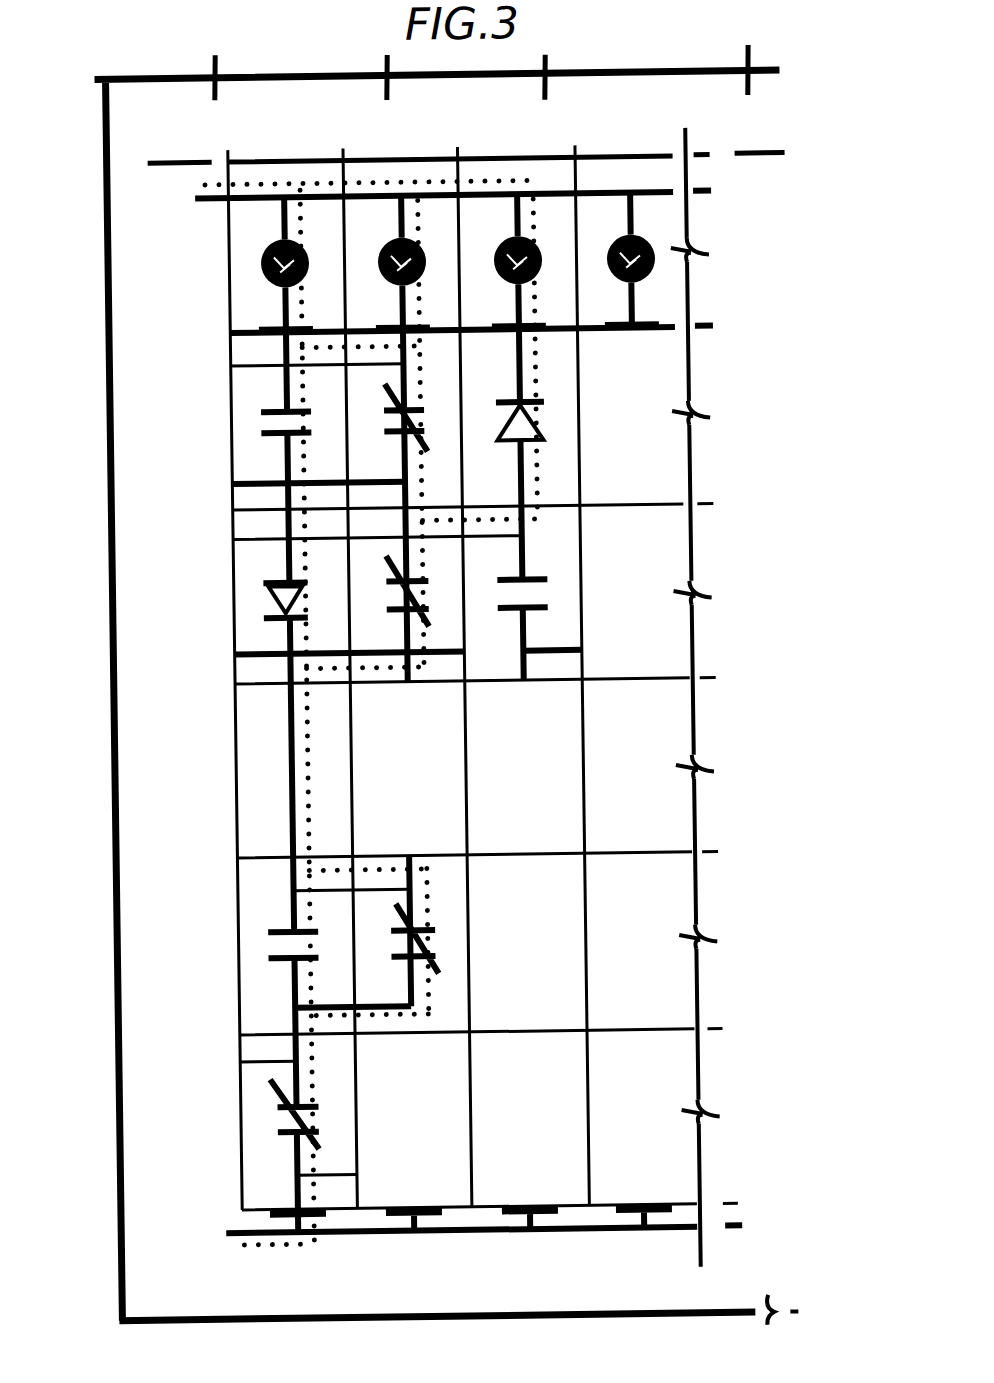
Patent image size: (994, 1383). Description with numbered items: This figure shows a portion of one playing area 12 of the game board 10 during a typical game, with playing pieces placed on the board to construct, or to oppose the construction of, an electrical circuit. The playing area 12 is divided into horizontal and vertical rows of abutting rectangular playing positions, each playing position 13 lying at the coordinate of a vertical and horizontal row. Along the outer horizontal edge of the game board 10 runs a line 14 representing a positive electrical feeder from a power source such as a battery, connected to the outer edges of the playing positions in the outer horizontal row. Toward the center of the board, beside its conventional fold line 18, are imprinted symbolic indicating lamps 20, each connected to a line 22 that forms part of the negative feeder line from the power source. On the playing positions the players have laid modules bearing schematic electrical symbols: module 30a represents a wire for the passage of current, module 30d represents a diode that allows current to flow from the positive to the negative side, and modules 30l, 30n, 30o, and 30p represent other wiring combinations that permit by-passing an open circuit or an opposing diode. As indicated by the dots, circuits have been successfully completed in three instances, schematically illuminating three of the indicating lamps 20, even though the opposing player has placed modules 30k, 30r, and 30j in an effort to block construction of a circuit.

The game board 10 is at (110, 336).
The playing area 12 is at (227, 709).
The playing position 13 is at (653, 980).
The line representing positive electrical feeder 14 is at (218, 1237).
The fold line 18 is at (207, 153).
The indicating lamp 20 is at (666, 248).
The line 22 is at (219, 197).
The module representing a wire 30a is at (254, 745).
The module representing a diode 30d is at (561, 379).
The module 30j is at (254, 395).
The module 30k is at (252, 922).
The module 30l is at (554, 563).
The module 30n is at (367, 611).
The module 30o is at (370, 437).
The module 30p is at (250, 1097).
The module 30r is at (248, 569).